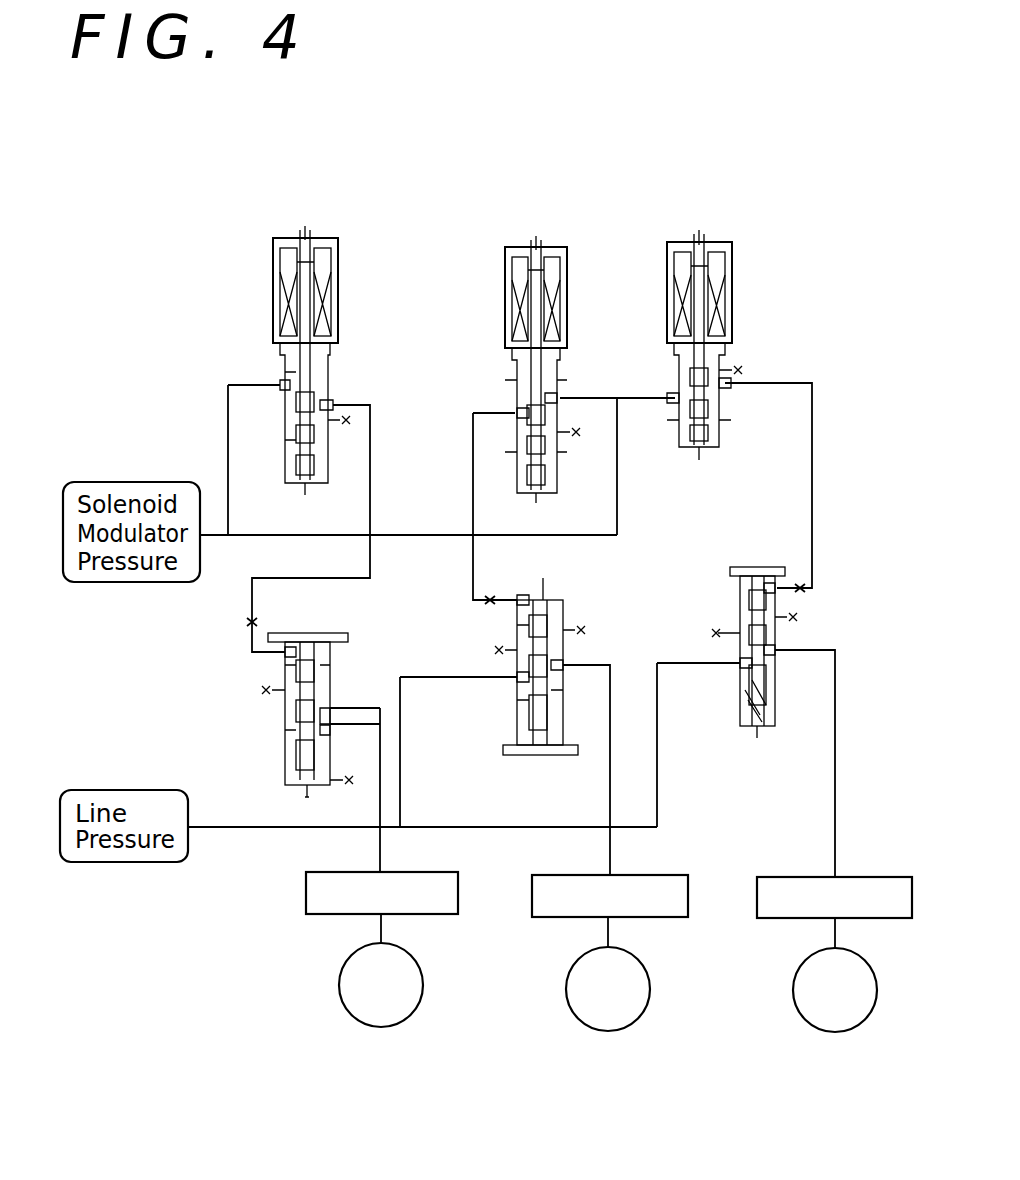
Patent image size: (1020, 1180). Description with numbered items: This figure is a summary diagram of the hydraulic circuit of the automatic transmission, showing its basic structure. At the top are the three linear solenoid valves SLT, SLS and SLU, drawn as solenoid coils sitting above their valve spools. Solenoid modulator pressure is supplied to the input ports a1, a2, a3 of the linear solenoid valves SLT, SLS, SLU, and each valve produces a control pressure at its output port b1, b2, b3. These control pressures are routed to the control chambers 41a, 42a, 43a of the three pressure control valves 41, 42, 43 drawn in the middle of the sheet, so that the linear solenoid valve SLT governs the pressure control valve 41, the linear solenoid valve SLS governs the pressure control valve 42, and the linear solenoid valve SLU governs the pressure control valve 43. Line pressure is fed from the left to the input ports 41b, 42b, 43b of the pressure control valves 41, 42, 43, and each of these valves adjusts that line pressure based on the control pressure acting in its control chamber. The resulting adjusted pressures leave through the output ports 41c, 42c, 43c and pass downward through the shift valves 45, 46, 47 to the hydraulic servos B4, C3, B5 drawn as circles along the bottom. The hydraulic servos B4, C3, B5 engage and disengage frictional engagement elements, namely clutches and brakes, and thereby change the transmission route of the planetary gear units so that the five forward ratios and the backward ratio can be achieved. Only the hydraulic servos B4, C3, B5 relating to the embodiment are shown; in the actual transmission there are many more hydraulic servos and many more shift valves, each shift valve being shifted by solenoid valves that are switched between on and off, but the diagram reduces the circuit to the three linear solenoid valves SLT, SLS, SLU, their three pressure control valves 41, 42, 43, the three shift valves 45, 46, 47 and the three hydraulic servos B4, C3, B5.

The linear solenoid valve SLT is at (333, 227).
The linear solenoid valve SLS is at (567, 236).
The linear solenoid valve SLU is at (732, 227).
The input port a1 is at (272, 383).
The output port b1 is at (340, 400).
The input port a2 is at (563, 395).
The output port b2 is at (505, 410).
The input port a3 is at (672, 395).
The output port b3 is at (735, 381).
The pressure control valve 41 is at (378, 641).
The control chamber 41a is at (300, 637).
The input port 41b is at (340, 728).
The output port 41c is at (335, 706).
The pressure control valve 42 is at (591, 618).
The control chamber 42a is at (533, 605).
The input port 42b is at (515, 681).
The output port 42c is at (567, 661).
The pressure control valve 43 is at (746, 547).
The control chamber 43a is at (768, 573).
The input port 43b is at (740, 664).
The output port 43c is at (777, 651).
The shift valve 45 is at (306, 890).
The shift valve 46 is at (532, 893).
The shift valve 47 is at (757, 890).
The hydraulic servo B4 is at (412, 951).
The hydraulic servo C3 is at (635, 951).
The hydraulic servo B5 is at (860, 949).